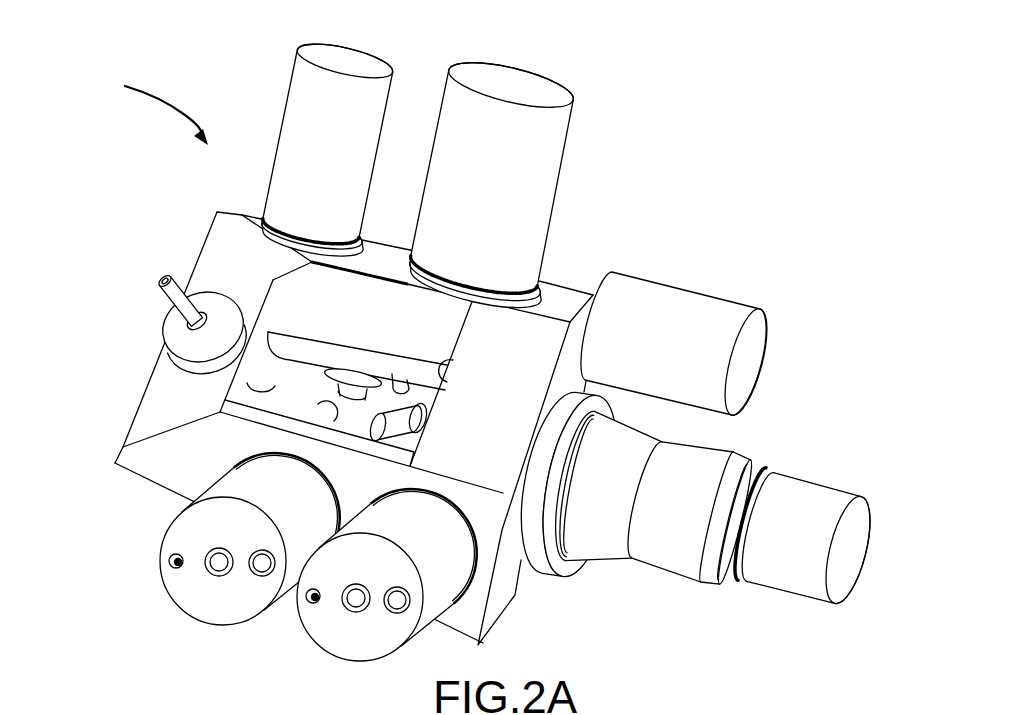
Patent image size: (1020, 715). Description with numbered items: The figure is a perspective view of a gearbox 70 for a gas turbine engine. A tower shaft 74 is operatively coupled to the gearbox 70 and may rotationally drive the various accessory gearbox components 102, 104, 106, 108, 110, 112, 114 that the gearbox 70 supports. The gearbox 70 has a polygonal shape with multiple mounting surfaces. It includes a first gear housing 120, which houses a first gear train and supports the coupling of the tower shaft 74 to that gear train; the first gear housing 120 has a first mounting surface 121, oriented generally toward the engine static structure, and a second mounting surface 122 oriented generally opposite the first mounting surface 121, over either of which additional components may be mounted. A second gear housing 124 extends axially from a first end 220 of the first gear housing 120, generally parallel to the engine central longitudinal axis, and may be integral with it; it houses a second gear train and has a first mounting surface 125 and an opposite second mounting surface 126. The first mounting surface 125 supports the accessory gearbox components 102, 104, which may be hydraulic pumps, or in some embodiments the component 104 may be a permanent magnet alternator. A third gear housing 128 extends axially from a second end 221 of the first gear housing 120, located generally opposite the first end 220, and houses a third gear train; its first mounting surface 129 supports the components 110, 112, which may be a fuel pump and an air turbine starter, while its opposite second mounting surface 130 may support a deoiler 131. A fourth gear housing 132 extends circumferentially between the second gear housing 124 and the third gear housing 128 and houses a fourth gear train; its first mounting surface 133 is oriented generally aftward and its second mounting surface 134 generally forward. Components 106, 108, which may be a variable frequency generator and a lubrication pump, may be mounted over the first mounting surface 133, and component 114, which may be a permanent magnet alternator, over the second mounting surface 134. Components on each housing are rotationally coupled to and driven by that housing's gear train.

The gearbox 70 is at (153, 104).
The tower shaft 74 is at (180, 300).
The accessory gearbox component 102 is at (212, 613).
The accessory gearbox component 104 is at (365, 648).
The accessory gearbox component 106 is at (828, 500).
The accessory gearbox component 108 is at (707, 305).
The accessory gearbox component 110 is at (532, 84).
The accessory gearbox component 112 is at (373, 68).
The accessory gearbox component 114 is at (398, 430).
The first gear housing 120 is at (147, 417).
The first mounting surface 121 is at (191, 403).
The second mounting surface 122 is at (283, 382).
The second gear housing 124 is at (177, 485).
The first mounting surface 125 is at (217, 473).
The second mounting surface 126 is at (319, 404).
The third gear housing 128 is at (547, 295).
The first mounting surface 129 is at (394, 270).
The second mounting surface 130 is at (395, 372).
The deoiler 131 is at (348, 378).
The fourth gear housing 132 is at (513, 522).
The first mounting surface 133 is at (584, 387).
The second mounting surface 134 is at (449, 364).
The first end 220 is at (118, 466).
The second end 221 is at (245, 218).